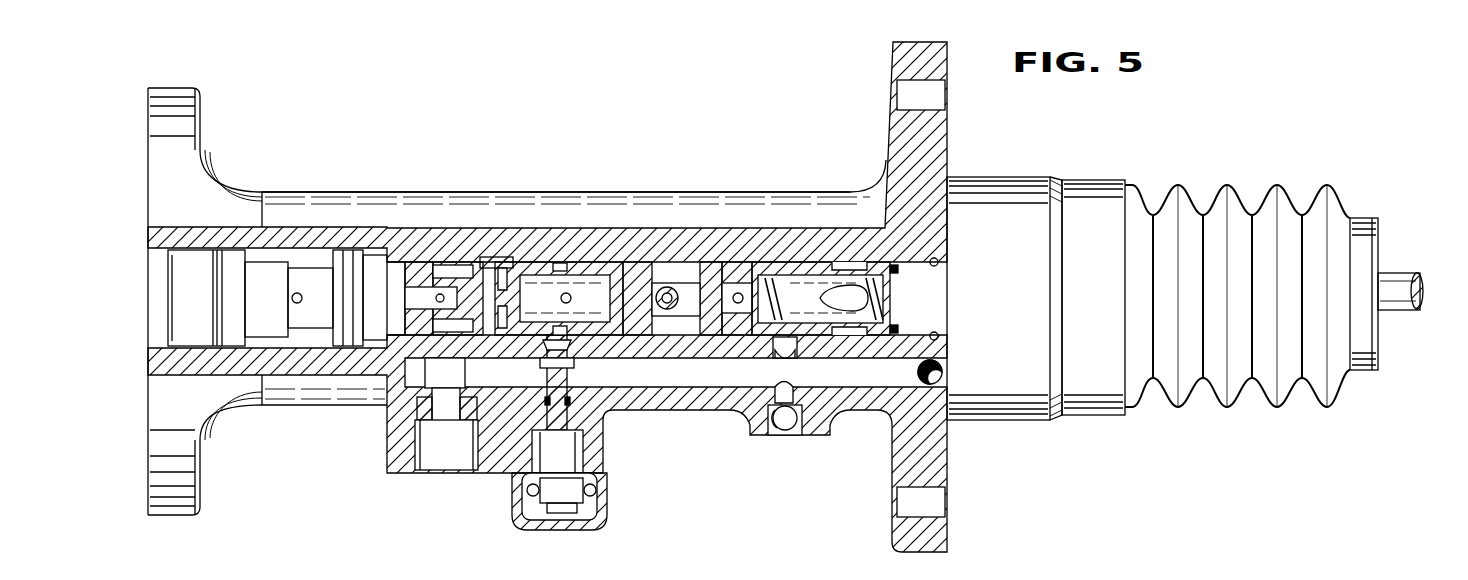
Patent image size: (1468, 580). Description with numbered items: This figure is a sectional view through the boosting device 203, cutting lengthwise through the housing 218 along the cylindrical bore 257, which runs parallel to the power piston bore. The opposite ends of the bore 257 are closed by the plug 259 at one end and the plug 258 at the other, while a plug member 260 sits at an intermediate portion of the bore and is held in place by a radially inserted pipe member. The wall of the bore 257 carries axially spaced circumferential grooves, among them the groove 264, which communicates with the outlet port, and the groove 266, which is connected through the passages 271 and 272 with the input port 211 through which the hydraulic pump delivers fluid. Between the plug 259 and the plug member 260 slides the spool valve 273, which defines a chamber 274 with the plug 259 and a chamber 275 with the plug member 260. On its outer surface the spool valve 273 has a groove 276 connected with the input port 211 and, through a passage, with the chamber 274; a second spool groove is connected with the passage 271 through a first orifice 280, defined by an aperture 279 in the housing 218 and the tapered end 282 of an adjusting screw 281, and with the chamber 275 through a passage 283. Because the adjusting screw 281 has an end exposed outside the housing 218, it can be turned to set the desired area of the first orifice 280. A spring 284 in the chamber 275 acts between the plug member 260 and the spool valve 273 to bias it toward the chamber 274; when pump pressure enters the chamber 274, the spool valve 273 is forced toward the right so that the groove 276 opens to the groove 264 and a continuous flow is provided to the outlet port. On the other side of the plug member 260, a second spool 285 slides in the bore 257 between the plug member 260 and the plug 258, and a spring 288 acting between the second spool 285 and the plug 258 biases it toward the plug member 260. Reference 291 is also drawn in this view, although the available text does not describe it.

The boosting device 203 is at (1158, 192).
The input port 211 is at (420, 450).
The housing 218 is at (814, 398).
The cylindrical bore 257 is at (390, 270).
The plug 258 is at (947, 280).
The plug 259 is at (185, 293).
The plug member 260 is at (648, 262).
The circumferential groove 264 is at (497, 258).
The circumferential groove 266 is at (481, 182).
The passage 271 is at (680, 388).
The passage 272 is at (778, 362).
The spool valve 273 is at (405, 278).
The chamber 274 is at (390, 325).
The chamber 275 is at (540, 292).
The groove 276 is at (452, 268).
The aperture 279 is at (548, 352).
The first orifice 280 is at (548, 372).
The adjusting screw 281 is at (585, 430).
The tapered end 282 is at (568, 370).
The passage 283 is at (568, 290).
The spring 284 is at (548, 262).
The second spool 285 is at (716, 265).
The spring 288 is at (800, 276).
The ball valve 291 is at (670, 283).